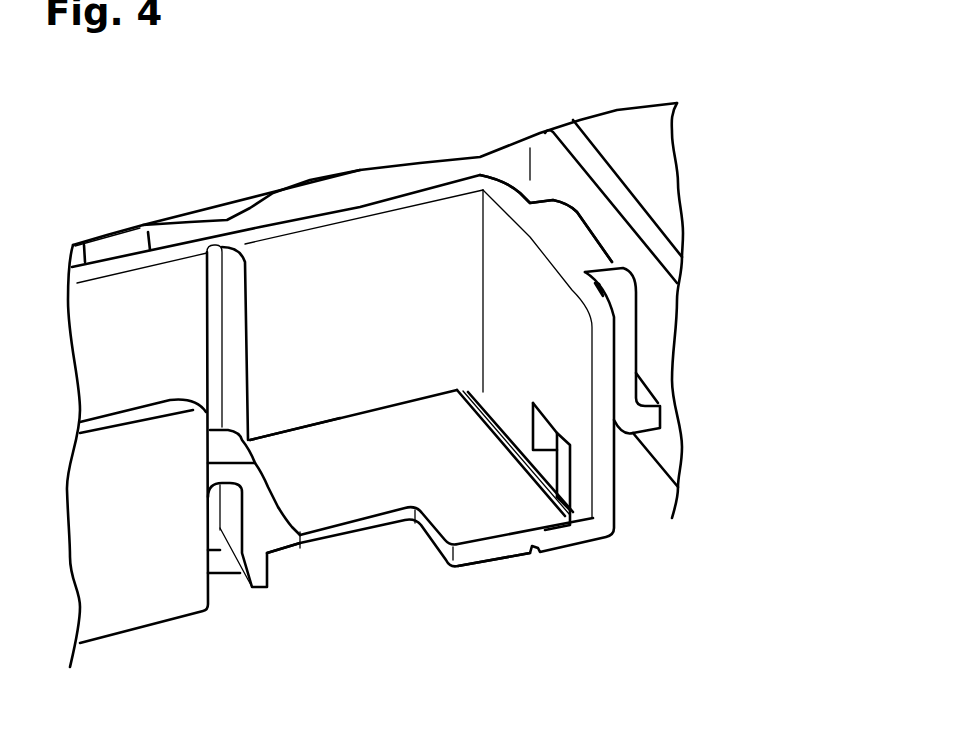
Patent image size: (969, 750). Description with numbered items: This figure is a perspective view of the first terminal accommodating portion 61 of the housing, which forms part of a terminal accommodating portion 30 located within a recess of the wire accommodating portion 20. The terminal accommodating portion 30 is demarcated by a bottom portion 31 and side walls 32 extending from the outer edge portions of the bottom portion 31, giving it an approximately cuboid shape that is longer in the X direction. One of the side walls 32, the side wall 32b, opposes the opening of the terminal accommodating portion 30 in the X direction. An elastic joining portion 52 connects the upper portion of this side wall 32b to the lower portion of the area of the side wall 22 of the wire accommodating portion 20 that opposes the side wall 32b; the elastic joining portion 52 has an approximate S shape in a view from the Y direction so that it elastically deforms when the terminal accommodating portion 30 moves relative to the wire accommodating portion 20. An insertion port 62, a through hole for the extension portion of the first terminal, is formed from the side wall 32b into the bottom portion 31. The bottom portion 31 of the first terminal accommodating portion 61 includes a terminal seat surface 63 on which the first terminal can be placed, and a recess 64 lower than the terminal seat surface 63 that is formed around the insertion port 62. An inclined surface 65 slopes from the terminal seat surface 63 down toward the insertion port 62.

The wire accommodating portion 20 is at (614, 299).
The side wall 22 is at (585, 152).
The terminal accommodating portion 30 is at (372, 385).
The bottom portion 31 is at (297, 442).
The side wall 32 is at (245, 233).
The side wall 32b is at (503, 178).
The elastic joining portion 52 is at (630, 337).
The first terminal accommodating portion 61 is at (110, 262).
The insertion port 62 is at (547, 470).
The terminal seat surface 63 is at (373, 422).
The recess 64 is at (483, 402).
The inclined surface 65 is at (467, 392).